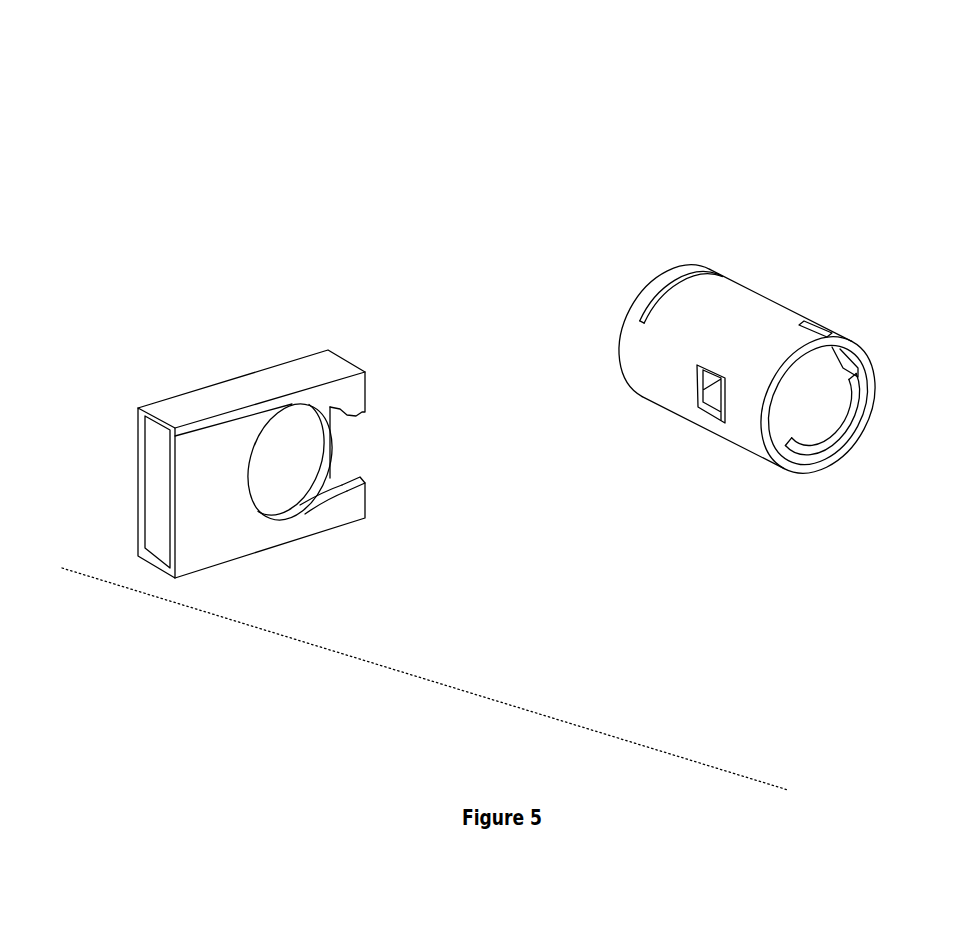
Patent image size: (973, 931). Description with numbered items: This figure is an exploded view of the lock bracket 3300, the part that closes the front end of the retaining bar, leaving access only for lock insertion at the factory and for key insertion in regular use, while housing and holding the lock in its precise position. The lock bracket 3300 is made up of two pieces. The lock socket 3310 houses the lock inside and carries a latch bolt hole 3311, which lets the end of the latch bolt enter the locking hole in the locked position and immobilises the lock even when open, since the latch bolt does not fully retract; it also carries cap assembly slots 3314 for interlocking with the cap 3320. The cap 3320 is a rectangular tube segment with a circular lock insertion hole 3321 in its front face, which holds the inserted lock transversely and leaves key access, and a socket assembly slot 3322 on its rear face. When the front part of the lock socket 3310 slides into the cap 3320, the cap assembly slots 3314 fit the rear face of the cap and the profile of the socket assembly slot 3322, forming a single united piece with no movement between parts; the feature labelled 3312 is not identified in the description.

The lock bracket 3300 is at (502, 413).
The lock socket 3310 is at (702, 332).
The latch bolt hole 3311 is at (698, 407).
The retaining tabs 3312 is at (857, 378).
The cap assembly slots 3314 is at (690, 396).
The cap 3320 is at (258, 422).
The lock insertion hole 3321 is at (294, 421).
The socket assembly slot 3322 is at (365, 434).